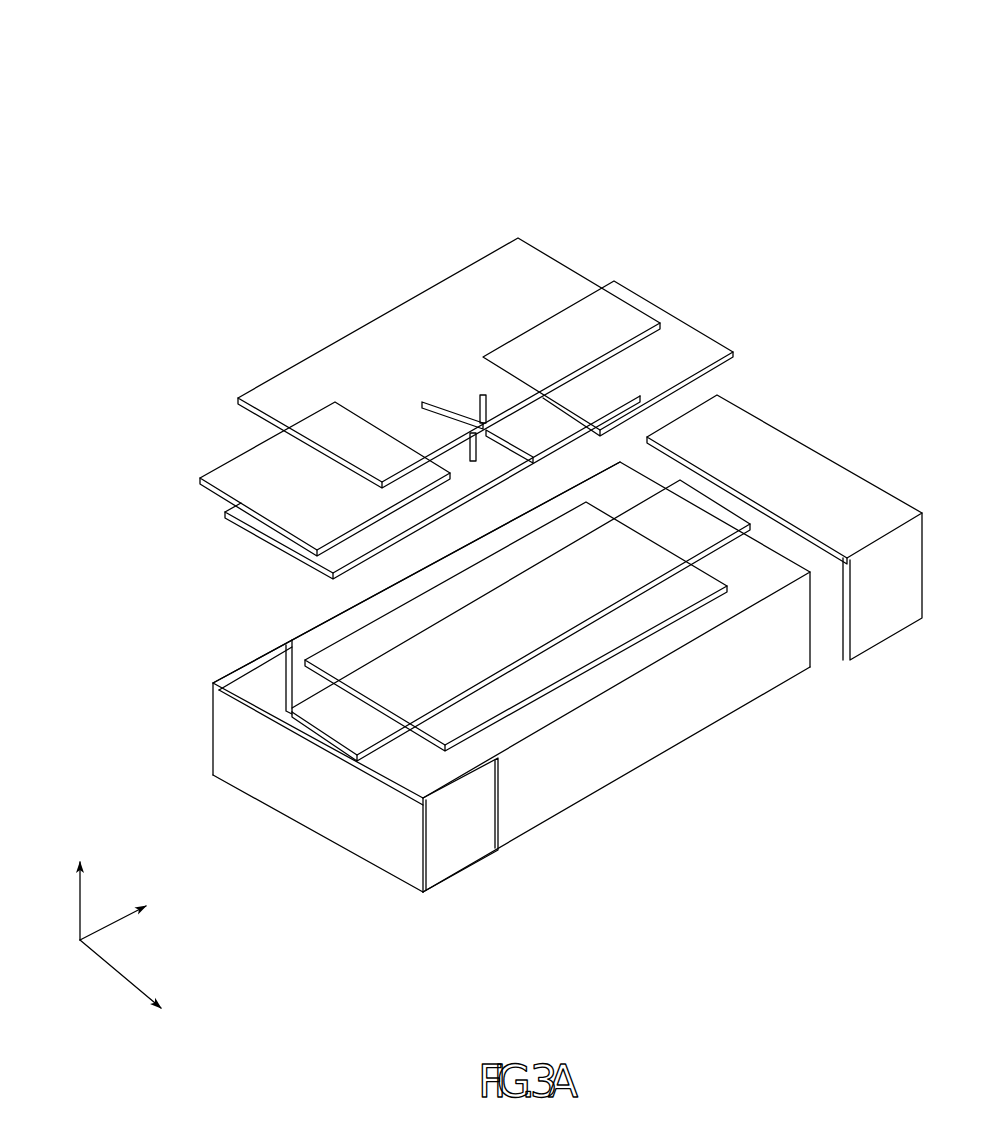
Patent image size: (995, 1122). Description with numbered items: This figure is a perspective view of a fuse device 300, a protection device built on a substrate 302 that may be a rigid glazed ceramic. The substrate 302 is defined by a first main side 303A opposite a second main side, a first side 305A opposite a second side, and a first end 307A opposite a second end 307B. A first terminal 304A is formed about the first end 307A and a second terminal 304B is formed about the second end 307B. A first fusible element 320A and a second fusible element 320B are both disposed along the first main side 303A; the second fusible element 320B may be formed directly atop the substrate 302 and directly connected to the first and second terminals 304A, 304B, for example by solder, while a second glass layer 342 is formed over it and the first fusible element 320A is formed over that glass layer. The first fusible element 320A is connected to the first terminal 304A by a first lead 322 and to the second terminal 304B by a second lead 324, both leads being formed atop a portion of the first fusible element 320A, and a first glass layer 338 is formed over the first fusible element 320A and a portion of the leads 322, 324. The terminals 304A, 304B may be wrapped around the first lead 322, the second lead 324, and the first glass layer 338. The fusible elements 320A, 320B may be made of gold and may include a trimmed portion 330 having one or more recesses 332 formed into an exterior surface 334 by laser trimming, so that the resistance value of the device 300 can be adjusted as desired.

The fuse device 300 is at (830, 126).
The substrate 302 is at (634, 738).
The first main side 303A is at (332, 632).
The first terminal 304A is at (458, 848).
The second terminal 304B is at (846, 486).
The first side 305A is at (253, 668).
The first end 307A is at (386, 893).
The second end 307B is at (824, 642).
The first fusible element 320A is at (540, 416).
The second fusible element 320B is at (492, 645).
The first lead 322 is at (276, 494).
The second lead 324 is at (688, 352).
The trimmed portion 330 is at (492, 450).
The recesses 332 is at (518, 440).
The exterior surface 334 is at (416, 515).
The first glass layer 338 is at (451, 328).
The second glass layer 342 is at (643, 613).